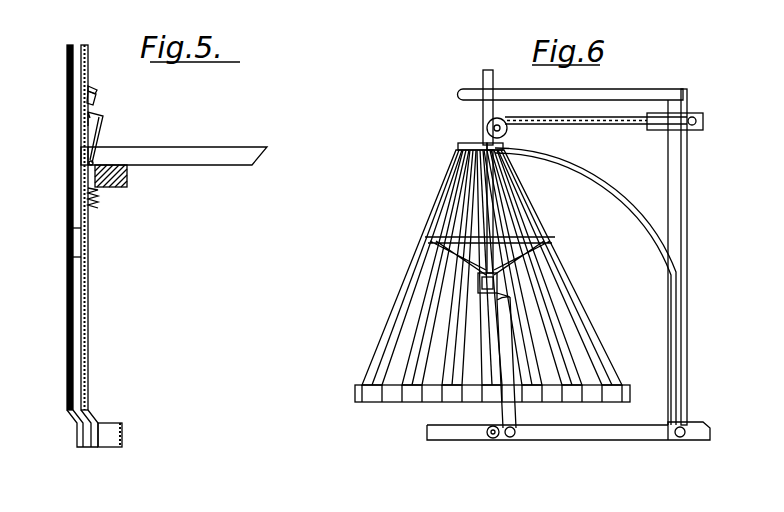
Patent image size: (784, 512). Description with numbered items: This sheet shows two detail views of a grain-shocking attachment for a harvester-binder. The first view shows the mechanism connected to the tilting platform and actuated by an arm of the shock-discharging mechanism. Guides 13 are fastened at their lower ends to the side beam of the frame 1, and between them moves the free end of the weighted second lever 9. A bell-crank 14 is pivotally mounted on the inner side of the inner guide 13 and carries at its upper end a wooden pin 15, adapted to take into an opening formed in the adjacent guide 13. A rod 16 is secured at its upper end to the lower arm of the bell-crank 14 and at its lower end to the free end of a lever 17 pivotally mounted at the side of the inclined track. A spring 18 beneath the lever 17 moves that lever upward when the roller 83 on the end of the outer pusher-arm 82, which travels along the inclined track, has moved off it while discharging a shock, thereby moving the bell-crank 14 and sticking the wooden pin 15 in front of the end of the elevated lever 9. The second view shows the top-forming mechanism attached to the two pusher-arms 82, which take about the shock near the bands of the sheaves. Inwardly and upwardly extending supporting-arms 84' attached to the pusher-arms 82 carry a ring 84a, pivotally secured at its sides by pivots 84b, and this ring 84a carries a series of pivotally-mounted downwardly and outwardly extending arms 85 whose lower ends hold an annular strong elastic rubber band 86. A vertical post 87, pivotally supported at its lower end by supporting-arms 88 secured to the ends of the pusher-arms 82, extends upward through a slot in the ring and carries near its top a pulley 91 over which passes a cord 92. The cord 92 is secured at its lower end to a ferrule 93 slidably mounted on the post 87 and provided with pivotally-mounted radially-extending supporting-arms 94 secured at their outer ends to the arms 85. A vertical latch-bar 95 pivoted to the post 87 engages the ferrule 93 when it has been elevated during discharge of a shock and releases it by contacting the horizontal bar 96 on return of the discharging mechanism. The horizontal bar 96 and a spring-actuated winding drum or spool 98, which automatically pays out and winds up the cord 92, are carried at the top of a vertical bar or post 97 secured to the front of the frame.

In FIG. 5, the frame 1 is at (122, 428).
In FIG. 5, the second lever 9 is at (88, 244).
In FIG. 5, the guides 13 is at (88, 320).
In FIG. 5, the bell-crank 14 is at (96, 99).
In FIG. 5, the wooden pin 15 is at (93, 88).
In FIG. 5, the rod 16 is at (100, 132).
In FIG. 5, the lever 17 is at (85, 182).
In FIG. 5, the spring 18 is at (99, 201).
In FIG. 5, the pusher-arms 82 is at (233, 148).
In FIG. 6, the pusher-arms 82 is at (568, 445).
In FIG. 5, the roller 83 is at (86, 152).
In FIG. 6, the roller 83 is at (489, 438).
In FIG. 6, the ring 84a is at (467, 141).
In FIG. 6, the pivots 84b is at (460, 147).
In FIG. 6, the supporting-arms 84' is at (585, 286).
In FIG. 6, the arms 85 is at (420, 345).
In FIG. 6, the elastic rubber band 86 is at (372, 393).
In FIG. 6, the vertical post 87 is at (486, 210).
In FIG. 6, the supporting-arms 88 is at (502, 390).
In FIG. 6, the pulley 91 is at (508, 130).
In FIG. 6, the cord 92 is at (612, 125).
In FIG. 6, the ferrule 93 is at (478, 287).
In FIG. 6, the radially-extending supporting-arms 94 is at (430, 261).
In FIG. 6, the vertical latch-bar 95 is at (483, 76).
In FIG. 6, the horizontal bar 96 is at (570, 85).
In FIG. 6, the vertical bar or post 97 is at (687, 222).
In FIG. 6, the spring-actuated winding drum or spool 98 is at (704, 121).